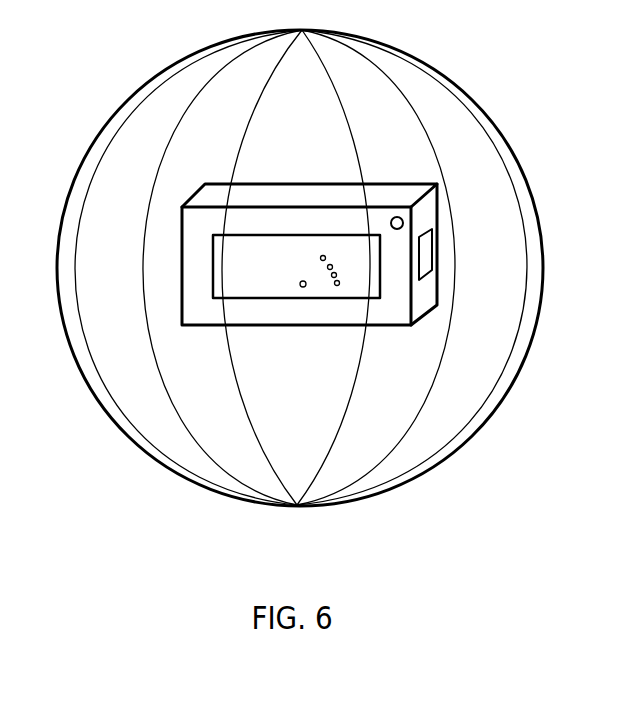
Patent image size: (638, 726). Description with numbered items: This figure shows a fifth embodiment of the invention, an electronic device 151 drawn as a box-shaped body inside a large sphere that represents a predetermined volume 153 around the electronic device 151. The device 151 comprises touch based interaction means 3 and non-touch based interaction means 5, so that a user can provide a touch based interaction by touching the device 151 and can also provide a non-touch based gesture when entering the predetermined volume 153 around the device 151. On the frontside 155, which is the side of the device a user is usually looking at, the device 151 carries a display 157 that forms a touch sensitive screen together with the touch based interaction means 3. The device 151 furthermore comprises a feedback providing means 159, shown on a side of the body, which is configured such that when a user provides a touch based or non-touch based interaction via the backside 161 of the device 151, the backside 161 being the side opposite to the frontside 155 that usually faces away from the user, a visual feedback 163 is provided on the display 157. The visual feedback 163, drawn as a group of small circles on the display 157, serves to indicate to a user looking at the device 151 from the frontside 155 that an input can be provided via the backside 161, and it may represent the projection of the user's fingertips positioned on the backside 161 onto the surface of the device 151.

The predetermined volume 153 is at (121, 108).
The electronic device 151 is at (301, 248).
The frontside 155 is at (244, 223).
The backside 161 is at (392, 203).
The touch based interaction means 3 is at (233, 300).
The display 157 is at (280, 286).
The visual feedback 163 is at (322, 280).
The non-touch based interaction means 5 is at (404, 223).
The feedback providing means 159 is at (433, 270).